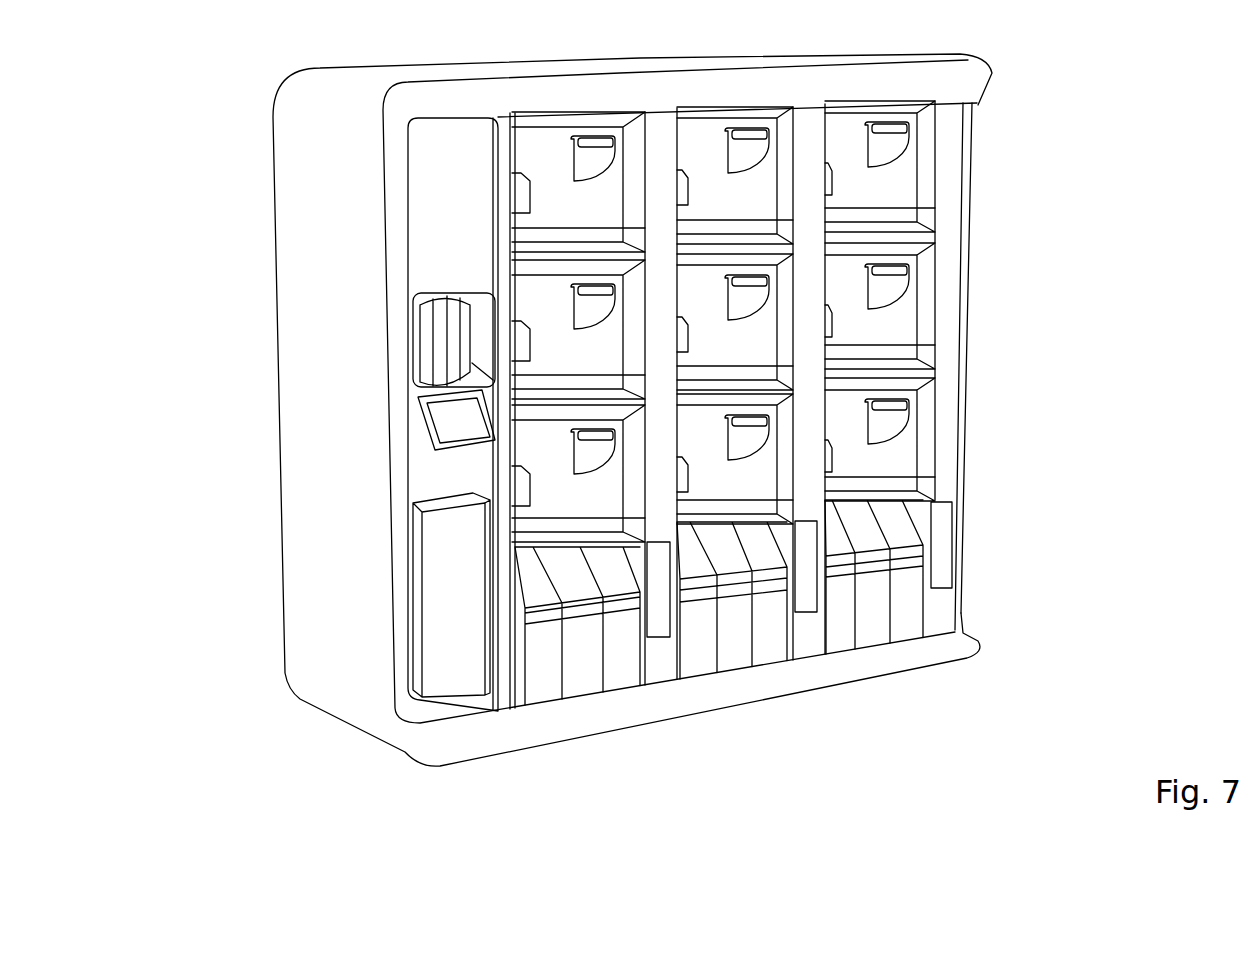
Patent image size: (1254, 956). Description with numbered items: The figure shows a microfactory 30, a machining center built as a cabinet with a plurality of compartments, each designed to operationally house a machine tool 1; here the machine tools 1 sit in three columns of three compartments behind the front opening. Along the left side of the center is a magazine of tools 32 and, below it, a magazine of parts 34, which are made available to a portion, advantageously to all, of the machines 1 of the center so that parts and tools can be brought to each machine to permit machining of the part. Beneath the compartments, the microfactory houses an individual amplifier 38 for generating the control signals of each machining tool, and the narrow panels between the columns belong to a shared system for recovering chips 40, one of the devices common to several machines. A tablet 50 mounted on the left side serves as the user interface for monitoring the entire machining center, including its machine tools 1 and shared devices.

The machine tool 1 is at (890, 317).
The microfactory 30 is at (1092, 567).
The magazine of tools 32 is at (443, 337).
The magazine of parts 34 is at (440, 565).
The individual amplifier 38 is at (543, 665).
The system for recovering chips 40 is at (660, 595).
The tablet 50 is at (440, 415).